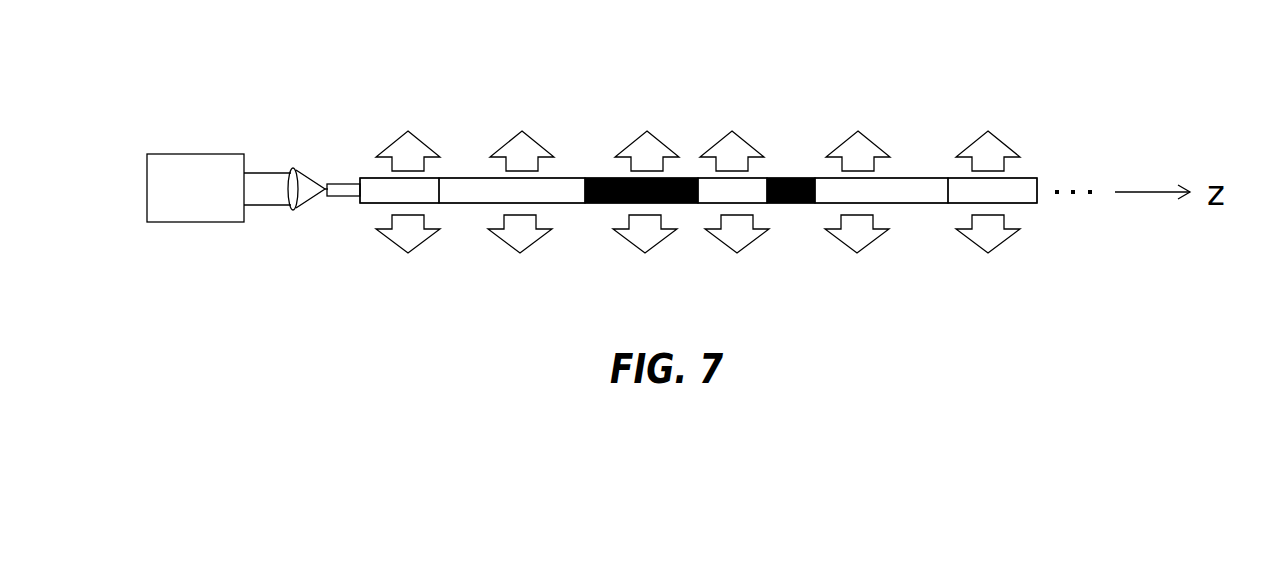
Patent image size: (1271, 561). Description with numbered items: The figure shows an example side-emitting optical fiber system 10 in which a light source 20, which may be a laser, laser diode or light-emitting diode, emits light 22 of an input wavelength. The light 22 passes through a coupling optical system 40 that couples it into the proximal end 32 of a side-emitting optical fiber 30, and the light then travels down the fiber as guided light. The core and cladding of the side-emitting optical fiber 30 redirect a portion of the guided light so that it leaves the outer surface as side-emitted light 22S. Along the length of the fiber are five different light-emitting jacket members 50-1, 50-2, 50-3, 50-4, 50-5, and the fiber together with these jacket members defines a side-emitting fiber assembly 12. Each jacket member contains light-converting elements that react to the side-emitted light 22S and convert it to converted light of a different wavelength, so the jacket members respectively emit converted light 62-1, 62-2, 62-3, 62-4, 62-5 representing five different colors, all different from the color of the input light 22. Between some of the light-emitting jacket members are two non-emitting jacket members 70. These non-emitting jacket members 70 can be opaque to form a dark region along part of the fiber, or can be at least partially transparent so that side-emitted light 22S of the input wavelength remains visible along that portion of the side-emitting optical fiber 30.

The side-emitting optical fiber system 10 is at (224, 54).
The side-emitting fiber assembly 12 is at (911, 73).
The light source 20 is at (212, 201).
The light 22 is at (262, 207).
The side-emitted light 22S is at (651, 135).
The side-emitting optical fiber 30 is at (347, 201).
The proximal end 32 is at (326, 187).
The coupling optical system 40 is at (293, 167).
The light-emitting jacket member 50-1 is at (372, 204).
The light-emitting jacket member 50-2 is at (470, 204).
The light-emitting jacket member 50-3 is at (758, 203).
The light-emitting jacket member 50-4 is at (908, 206).
The light-emitting jacket member 50-5 is at (1033, 206).
The converted light 62-1 is at (425, 143).
The converted light 62-2 is at (538, 143).
The converted light 62-3 is at (740, 143).
The converted light 62-4 is at (877, 145).
The converted light 62-5 is at (1007, 145).
The non-emitting jacket member 70 is at (623, 177).